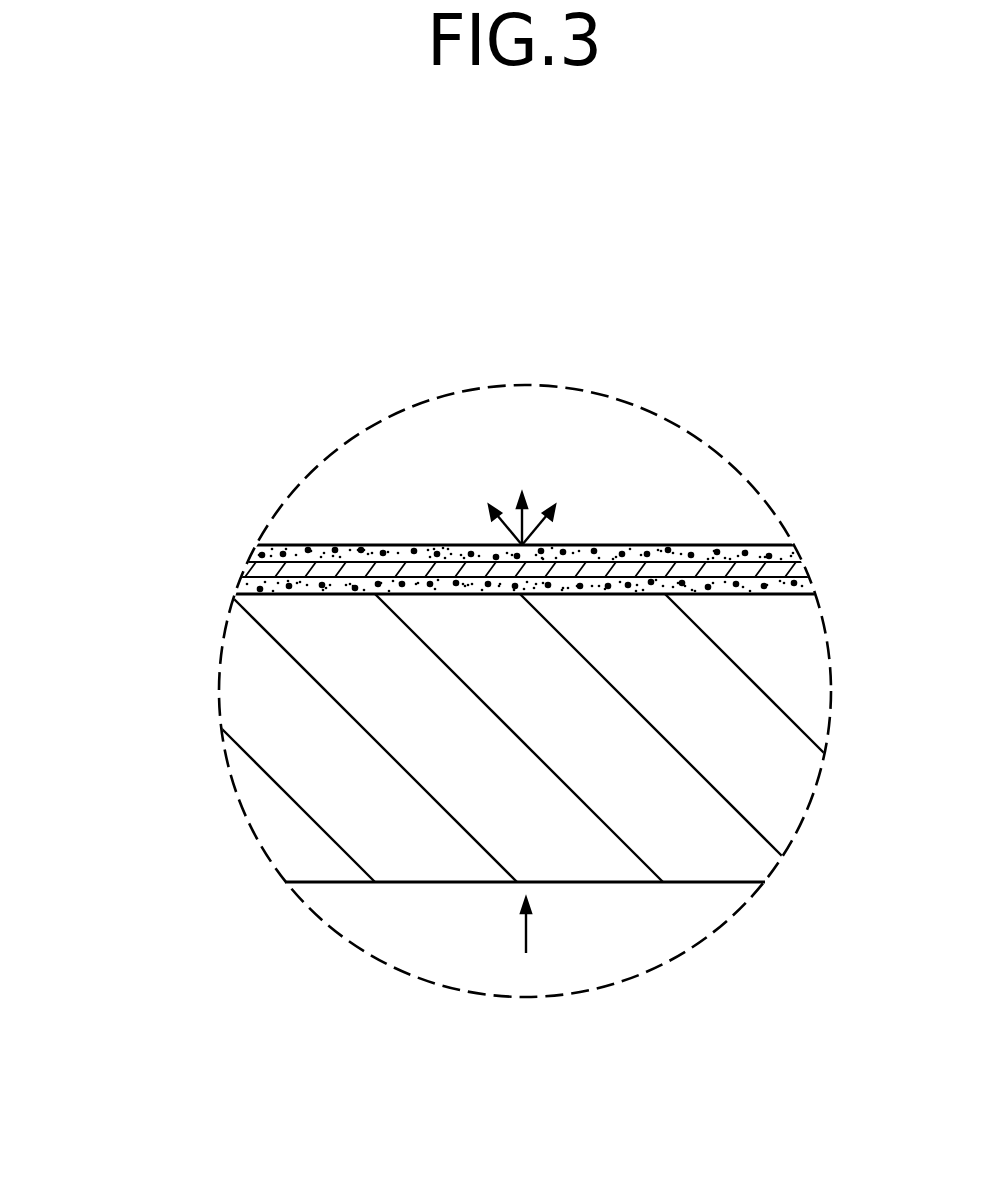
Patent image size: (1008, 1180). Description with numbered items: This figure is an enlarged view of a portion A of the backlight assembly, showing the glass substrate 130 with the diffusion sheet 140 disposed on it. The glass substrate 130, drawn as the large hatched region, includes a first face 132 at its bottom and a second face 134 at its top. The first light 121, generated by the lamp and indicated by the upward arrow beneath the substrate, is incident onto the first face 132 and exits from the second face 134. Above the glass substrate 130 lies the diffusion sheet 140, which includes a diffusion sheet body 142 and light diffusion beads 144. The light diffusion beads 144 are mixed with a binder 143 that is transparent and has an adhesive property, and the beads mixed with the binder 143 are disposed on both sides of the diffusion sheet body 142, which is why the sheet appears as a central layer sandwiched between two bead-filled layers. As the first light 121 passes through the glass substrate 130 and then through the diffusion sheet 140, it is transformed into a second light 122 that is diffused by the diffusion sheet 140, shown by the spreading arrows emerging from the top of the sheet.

The portion A is at (705, 447).
The first light 121 is at (528, 937).
The second light 122 is at (535, 533).
The glass substrate 130 is at (240, 745).
The first face 132 is at (760, 880).
The second face 134 is at (793, 597).
The diffusion sheet 140 is at (172, 427).
The diffusion sheet body 142 is at (245, 570).
The binder 143 is at (255, 550).
The light diffusion bead 144 is at (325, 547).